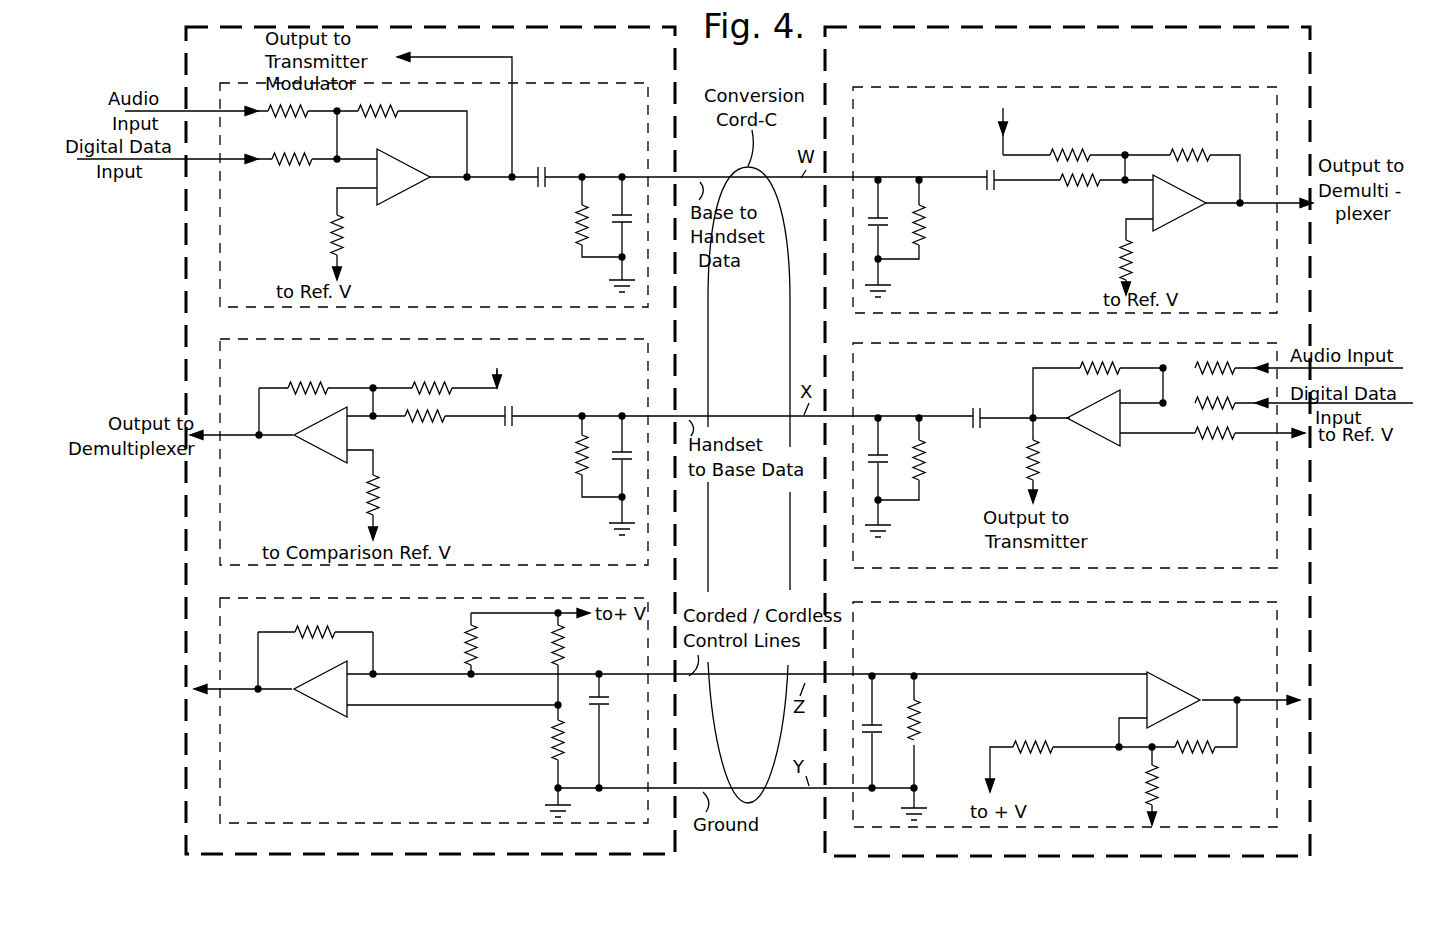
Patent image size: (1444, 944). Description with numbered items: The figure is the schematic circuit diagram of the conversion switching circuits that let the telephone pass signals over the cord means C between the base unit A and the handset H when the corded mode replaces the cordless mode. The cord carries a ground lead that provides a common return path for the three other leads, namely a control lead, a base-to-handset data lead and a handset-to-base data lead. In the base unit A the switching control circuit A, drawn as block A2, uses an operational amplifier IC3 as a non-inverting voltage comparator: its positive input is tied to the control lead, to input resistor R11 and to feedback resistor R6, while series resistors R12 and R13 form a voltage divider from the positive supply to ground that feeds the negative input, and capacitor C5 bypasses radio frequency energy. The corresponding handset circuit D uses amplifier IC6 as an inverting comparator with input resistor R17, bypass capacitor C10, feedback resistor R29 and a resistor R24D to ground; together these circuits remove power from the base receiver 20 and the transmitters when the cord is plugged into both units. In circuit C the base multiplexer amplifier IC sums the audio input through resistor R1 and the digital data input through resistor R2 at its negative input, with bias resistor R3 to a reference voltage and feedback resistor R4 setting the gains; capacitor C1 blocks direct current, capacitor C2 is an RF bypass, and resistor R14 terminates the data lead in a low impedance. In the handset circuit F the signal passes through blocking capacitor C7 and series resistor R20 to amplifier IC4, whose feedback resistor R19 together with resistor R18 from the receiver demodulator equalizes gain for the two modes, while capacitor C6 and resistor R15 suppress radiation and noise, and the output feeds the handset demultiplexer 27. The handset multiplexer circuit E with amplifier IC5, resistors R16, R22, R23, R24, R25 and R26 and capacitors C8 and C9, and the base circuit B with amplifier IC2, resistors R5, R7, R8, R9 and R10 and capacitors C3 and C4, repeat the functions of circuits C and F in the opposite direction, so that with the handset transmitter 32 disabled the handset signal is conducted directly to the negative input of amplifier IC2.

The base unit A is at (657, 52).
The handset H is at (1292, 58).
The conversion switching circuit C is at (634, 113).
The conversion switching circuit B is at (638, 371).
The base control block A A2 is at (250, 815).
The conversion switching circuit F is at (1259, 113).
The conversion switching circuit E is at (884, 371).
The control switching circuit D is at (1260, 824).
The series input resistor R1 is at (288, 100).
The series resistor R2 is at (717, 205).
The bias offset resistor R3 is at (351, 241).
The feedback resistor R4 is at (378, 100).
The resistor R5 is at (308, 377).
The feedback resistor R6 is at (315, 621).
The resistor R7 is at (432, 377).
The resistor R8 is at (425, 427).
The resistor R9 is at (387, 495).
The resistor R10 is at (559, 455).
The input resistor R11 is at (449, 645).
The voltage dividing resistor R12 is at (539, 645).
The voltage dividing resistor R13 is at (539, 740).
The terminating resistor R14 is at (565, 225).
The input resistor R15 is at (939, 225).
The resistor R16 is at (939, 460).
The input resistor R17 is at (935, 720).
The resistor R18 is at (1070, 143).
The feedback resistor R19 is at (1190, 143).
The input series resistor R20 is at (1079, 192).
The resistor R22 is at (1100, 356).
The resistor R23 is at (1215, 356).
The resistor R24 is at (1215, 392).
The resistor R24D is at (1179, 785).
The resistor R25 is at (1215, 446).
The resistor R26 is at (1052, 460).
The feedback resistor R29 is at (1195, 737).
The DC blocking capacitor C1 is at (542, 165).
The RF bypass capacitor C2 is at (635, 221).
The capacitor C3 is at (509, 426).
The capacitor C4 is at (635, 458).
The RF bypass capacitor C5 is at (612, 704).
The RF bypass capacitor C6 is at (864, 217).
The DC blocking capacitor C7 is at (992, 190).
The capacitor C8 is at (863, 453).
The capacitor C9 is at (977, 405).
The RF bypass capacitor C10 is at (856, 725).
The operational amplifier IC is at (403, 175).
The operational amplifier IC2 is at (328, 430).
The operational amplifier IC3 is at (328, 688).
The operational amplifier IC4 is at (1172, 200).
The operational amplifier IC5 is at (1101, 415).
The operational amplifier IC6 is at (1166, 696).
The receiver 20 is at (786, 224).
The demultiplexer 27 is at (1365, 236).
The transmitter 32 is at (1044, 565).